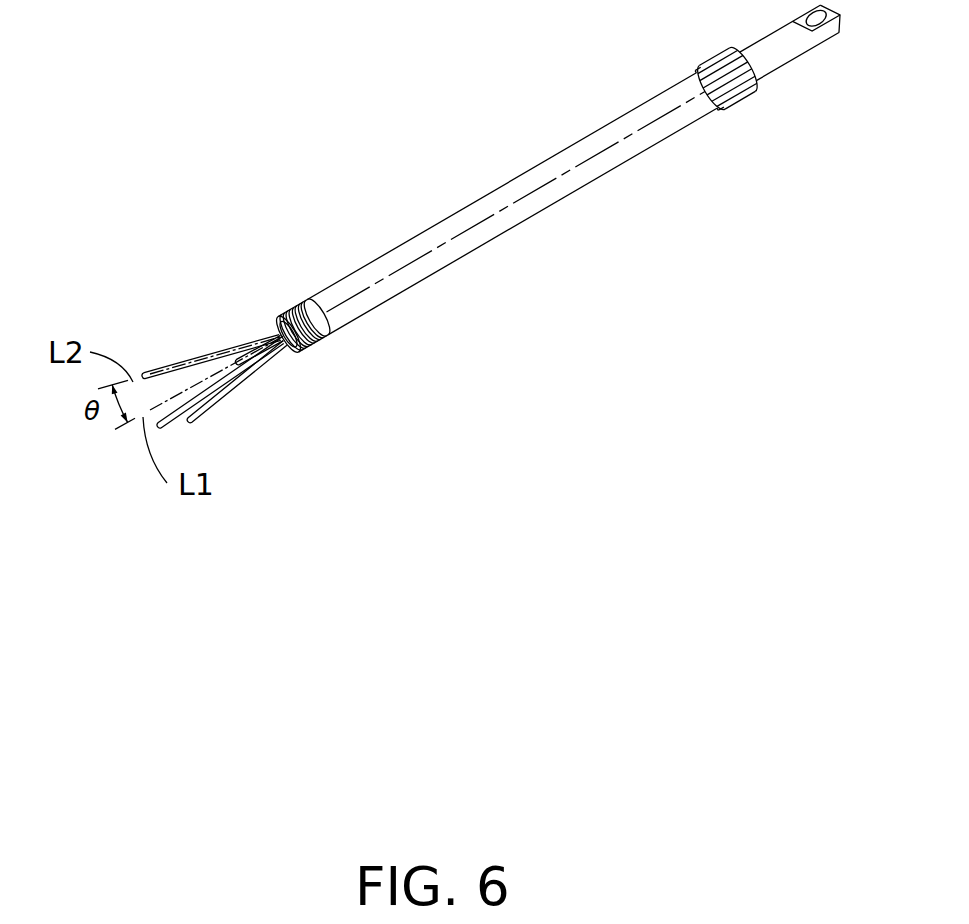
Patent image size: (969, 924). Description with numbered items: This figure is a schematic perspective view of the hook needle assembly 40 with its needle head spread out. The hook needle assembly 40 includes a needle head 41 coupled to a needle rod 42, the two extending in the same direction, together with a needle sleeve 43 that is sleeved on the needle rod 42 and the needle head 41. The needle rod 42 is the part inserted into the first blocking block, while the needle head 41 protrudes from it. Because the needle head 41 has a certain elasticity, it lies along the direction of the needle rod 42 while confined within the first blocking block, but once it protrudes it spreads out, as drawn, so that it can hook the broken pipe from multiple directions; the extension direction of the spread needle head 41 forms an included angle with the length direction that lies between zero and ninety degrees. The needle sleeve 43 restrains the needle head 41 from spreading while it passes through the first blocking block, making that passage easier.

The hook needle assembly 40 is at (508, 216).
The needle head 41 is at (256, 363).
The needle rod 42 is at (786, 52).
The needle sleeve 43 is at (535, 200).